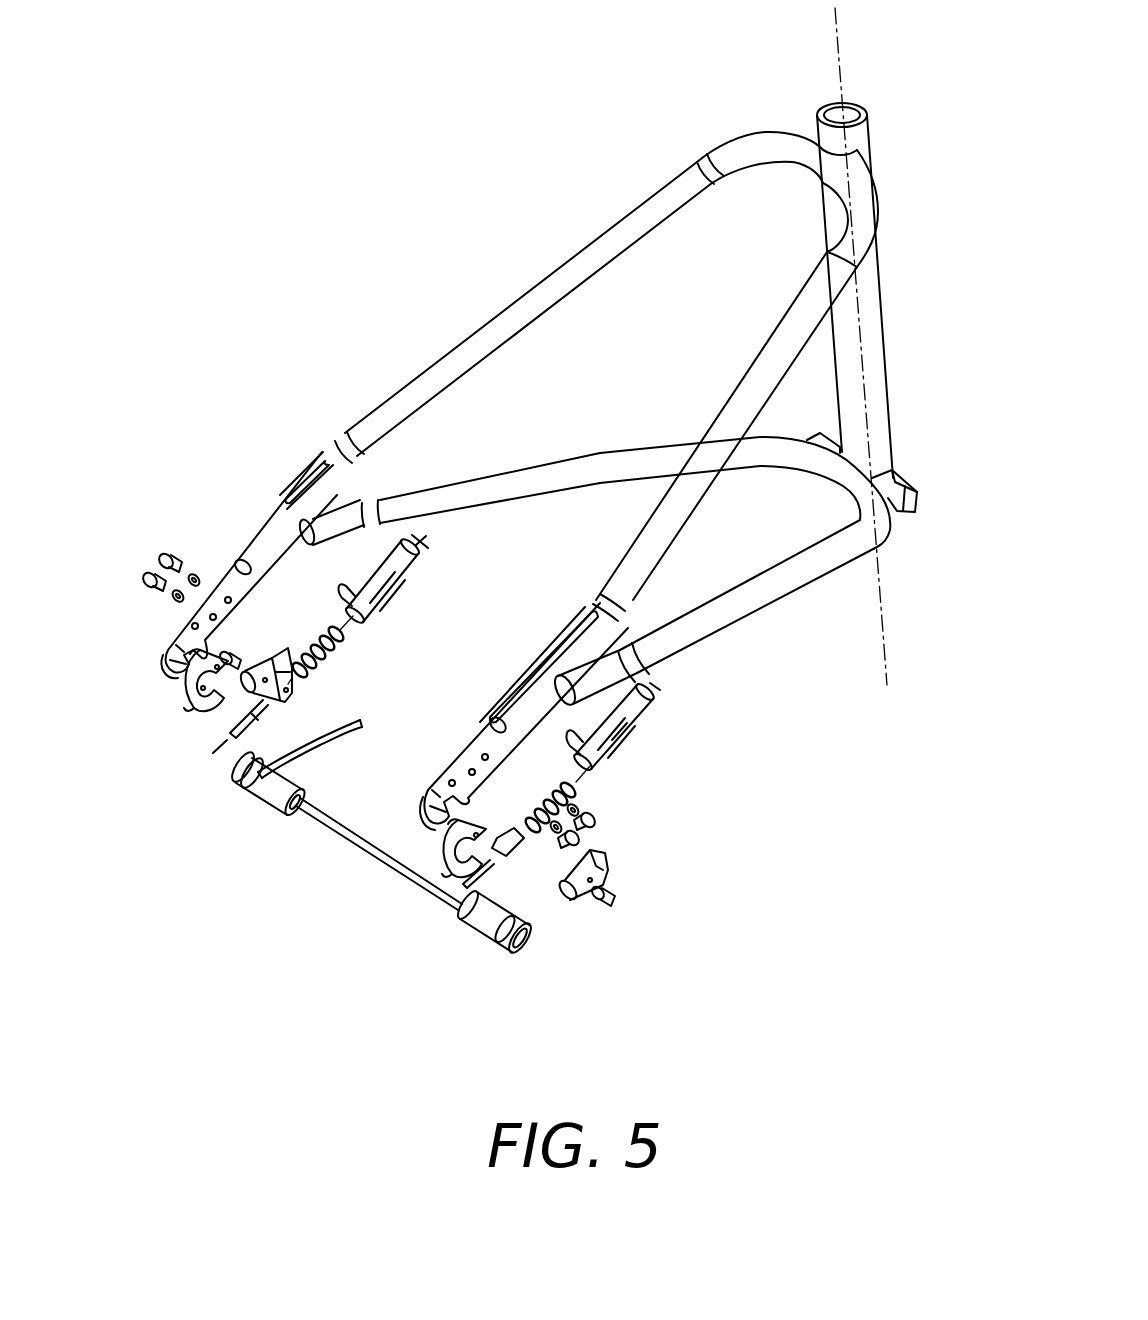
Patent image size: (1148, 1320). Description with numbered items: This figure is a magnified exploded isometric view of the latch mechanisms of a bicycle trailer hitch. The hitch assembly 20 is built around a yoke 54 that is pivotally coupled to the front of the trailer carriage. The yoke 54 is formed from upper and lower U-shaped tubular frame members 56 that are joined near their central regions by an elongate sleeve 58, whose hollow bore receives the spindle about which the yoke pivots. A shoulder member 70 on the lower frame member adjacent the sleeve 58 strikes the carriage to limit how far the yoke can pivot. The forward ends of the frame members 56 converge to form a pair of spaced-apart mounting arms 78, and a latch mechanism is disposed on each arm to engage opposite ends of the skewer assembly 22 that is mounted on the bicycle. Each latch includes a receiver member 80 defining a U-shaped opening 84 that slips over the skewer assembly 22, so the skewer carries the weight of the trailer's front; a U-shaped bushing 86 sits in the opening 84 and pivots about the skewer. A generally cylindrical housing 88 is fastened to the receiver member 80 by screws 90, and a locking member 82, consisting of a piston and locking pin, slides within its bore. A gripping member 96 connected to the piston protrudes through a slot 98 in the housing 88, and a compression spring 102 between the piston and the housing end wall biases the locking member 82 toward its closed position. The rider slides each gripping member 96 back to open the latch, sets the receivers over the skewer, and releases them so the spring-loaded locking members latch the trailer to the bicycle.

The hitch assembly 20 is at (465, 120).
The skewer assembly 22 is at (247, 946).
The yoke 54 is at (487, 324).
The tubular frame members 56 is at (663, 184).
The elongate sleeve 58 is at (878, 336).
The shoulder member 70 is at (900, 478).
The mounting arm 78 is at (285, 490).
The receiver member 80 is at (172, 638).
The locking member 82 is at (276, 716).
The U-shaped opening 84 is at (175, 656).
The U-shaped bushing 86 is at (200, 706).
The cylindrical housing 88 is at (410, 567).
The screws 90 is at (150, 578).
The gripping member 96 is at (265, 668).
The slot 98 is at (618, 744).
The compression spring 102 is at (334, 652).